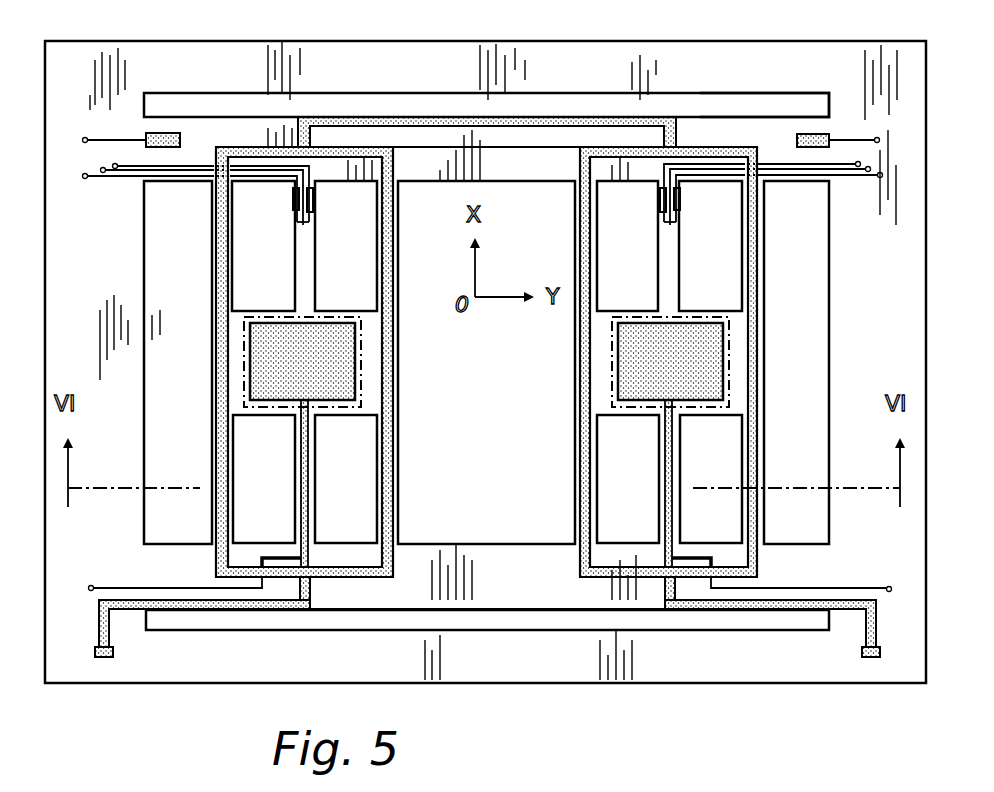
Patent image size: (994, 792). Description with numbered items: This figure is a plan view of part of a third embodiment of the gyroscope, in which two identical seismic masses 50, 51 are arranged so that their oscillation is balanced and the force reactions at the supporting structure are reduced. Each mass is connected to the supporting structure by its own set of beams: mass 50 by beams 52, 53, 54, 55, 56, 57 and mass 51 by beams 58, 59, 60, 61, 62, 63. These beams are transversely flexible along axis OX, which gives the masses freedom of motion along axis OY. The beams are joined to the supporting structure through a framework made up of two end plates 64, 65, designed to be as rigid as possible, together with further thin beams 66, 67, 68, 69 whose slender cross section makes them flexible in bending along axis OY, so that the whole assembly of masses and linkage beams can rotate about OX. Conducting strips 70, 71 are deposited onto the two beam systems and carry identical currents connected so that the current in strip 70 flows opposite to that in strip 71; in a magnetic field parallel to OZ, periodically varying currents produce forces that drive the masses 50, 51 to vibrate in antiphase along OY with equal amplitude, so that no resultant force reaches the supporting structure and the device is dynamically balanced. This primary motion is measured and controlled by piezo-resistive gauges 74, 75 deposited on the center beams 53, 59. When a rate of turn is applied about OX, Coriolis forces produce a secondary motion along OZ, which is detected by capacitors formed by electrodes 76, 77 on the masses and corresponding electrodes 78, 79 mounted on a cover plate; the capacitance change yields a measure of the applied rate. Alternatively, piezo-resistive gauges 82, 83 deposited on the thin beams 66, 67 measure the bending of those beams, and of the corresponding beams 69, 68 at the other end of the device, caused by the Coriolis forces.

The seismic mass 50 is at (365, 360).
The seismic mass 51 is at (600, 345).
The beam 52 is at (214, 240).
The center beam 53 is at (308, 243).
The beam 54 is at (380, 228).
The beam 55 is at (216, 443).
The beam 56 is at (298, 462).
The beam 57 is at (376, 449).
The beam 58 is at (577, 238).
The center beam 59 is at (669, 244).
The beam 60 is at (748, 233).
The beam 61 is at (578, 505).
The beam 62 is at (664, 508).
The beam 63 is at (745, 509).
The end plate 64 is at (518, 168).
The end plate 65 is at (518, 590).
The thin beam 66 is at (188, 128).
The thin beam 67 is at (815, 127).
The thin beam 68 is at (783, 577).
The thin beam 69 is at (170, 577).
The conducting strip 70 is at (388, 467).
The conducting strip 71 is at (583, 455).
The piezo-resistive gauge 74 is at (295, 203).
The piezo-resistive gauge 75 is at (659, 205).
The electrode 76 is at (316, 374).
The electrode 77 is at (677, 358).
The electrode 78 is at (365, 385).
The electrode 79 is at (731, 389).
The piezo-resistive gauge 82 is at (158, 133).
The piezo-resistive gauge 83 is at (797, 140).